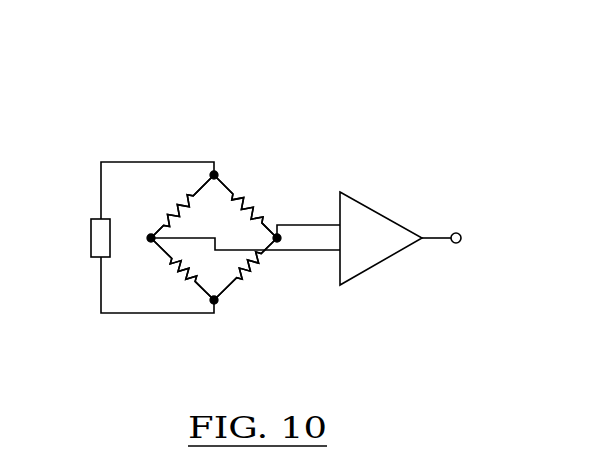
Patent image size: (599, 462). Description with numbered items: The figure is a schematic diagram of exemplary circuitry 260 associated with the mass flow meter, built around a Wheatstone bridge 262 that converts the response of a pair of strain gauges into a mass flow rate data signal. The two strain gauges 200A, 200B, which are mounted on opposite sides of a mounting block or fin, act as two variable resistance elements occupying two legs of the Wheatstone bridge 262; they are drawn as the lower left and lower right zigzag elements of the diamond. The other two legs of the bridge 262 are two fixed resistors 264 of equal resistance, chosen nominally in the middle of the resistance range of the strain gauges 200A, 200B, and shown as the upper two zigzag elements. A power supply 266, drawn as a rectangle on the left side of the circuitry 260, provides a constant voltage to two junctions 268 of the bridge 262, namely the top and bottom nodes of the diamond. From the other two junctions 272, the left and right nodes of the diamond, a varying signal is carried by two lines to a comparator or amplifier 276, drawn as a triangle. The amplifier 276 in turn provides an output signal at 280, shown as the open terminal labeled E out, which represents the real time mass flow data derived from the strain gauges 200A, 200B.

The circuitry 260 is at (348, 148).
The Wheatstone bridge 262 is at (226, 155).
The fixed resistors 264 is at (180, 198).
The power supply 266 is at (89, 234).
The junctions 268 is at (213, 173).
The junctions 272 is at (149, 238).
The comparator or amplifier 276 is at (391, 214).
The output signal 280 is at (453, 245).
The strain gauge 200A is at (178, 268).
The strain gauge 200B is at (248, 272).